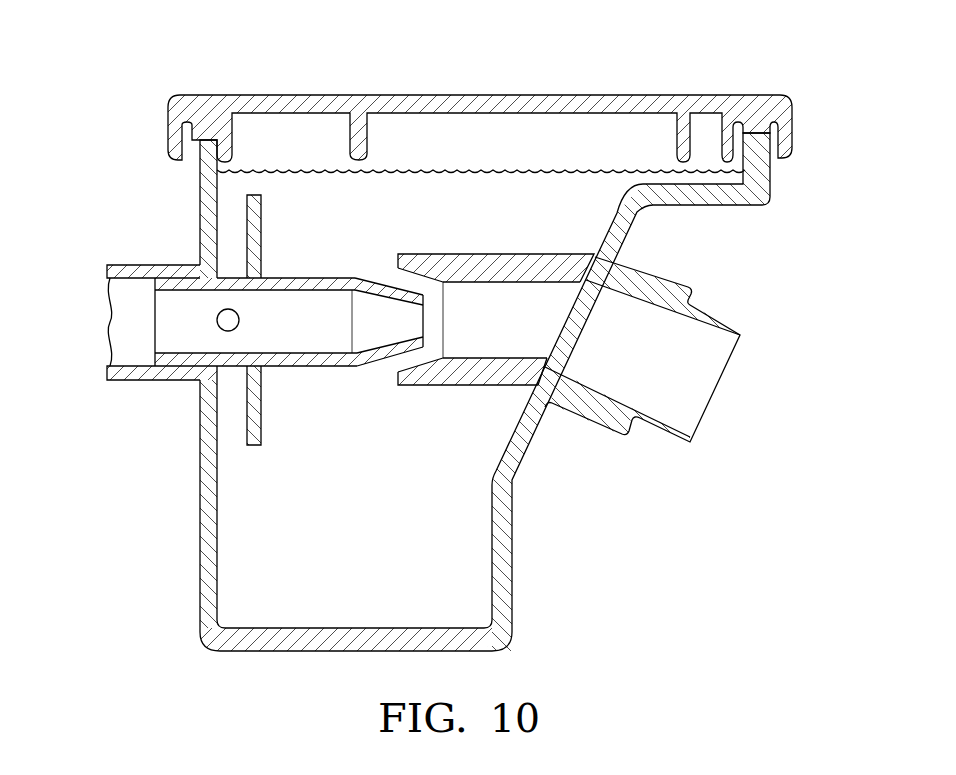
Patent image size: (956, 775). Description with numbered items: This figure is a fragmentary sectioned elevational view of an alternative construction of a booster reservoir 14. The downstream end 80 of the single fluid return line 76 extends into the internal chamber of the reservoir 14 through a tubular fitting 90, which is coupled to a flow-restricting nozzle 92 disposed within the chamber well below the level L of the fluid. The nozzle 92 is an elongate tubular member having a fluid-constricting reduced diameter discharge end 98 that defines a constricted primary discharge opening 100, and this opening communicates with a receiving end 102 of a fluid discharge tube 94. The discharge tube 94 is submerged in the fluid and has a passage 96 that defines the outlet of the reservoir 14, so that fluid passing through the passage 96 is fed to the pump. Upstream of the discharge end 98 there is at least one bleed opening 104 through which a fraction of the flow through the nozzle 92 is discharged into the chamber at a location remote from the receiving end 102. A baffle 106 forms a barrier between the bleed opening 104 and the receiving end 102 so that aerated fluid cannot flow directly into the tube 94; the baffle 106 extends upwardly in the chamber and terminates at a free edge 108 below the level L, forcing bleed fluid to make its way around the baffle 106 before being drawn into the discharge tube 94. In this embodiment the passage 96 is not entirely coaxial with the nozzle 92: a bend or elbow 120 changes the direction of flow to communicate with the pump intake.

The reservoir 14 is at (757, 95).
The level of the fluid L is at (590, 168).
The single fluid return line 76 is at (108, 382).
The downstream end 80 is at (137, 381).
The tubular fitting 90 is at (152, 264).
The flow-restricting nozzle 92 is at (305, 277).
The fluid discharge tube 94 is at (540, 253).
The passage 96 is at (506, 284).
The reduced diameter discharge end 98 is at (373, 281).
The primary discharge opening 100 is at (395, 338).
The receiving end 102 is at (405, 274).
The bleed opening 104 is at (217, 320).
The baffle 106 is at (247, 433).
The free edge 108 is at (249, 195).
The elbow 120 is at (640, 260).